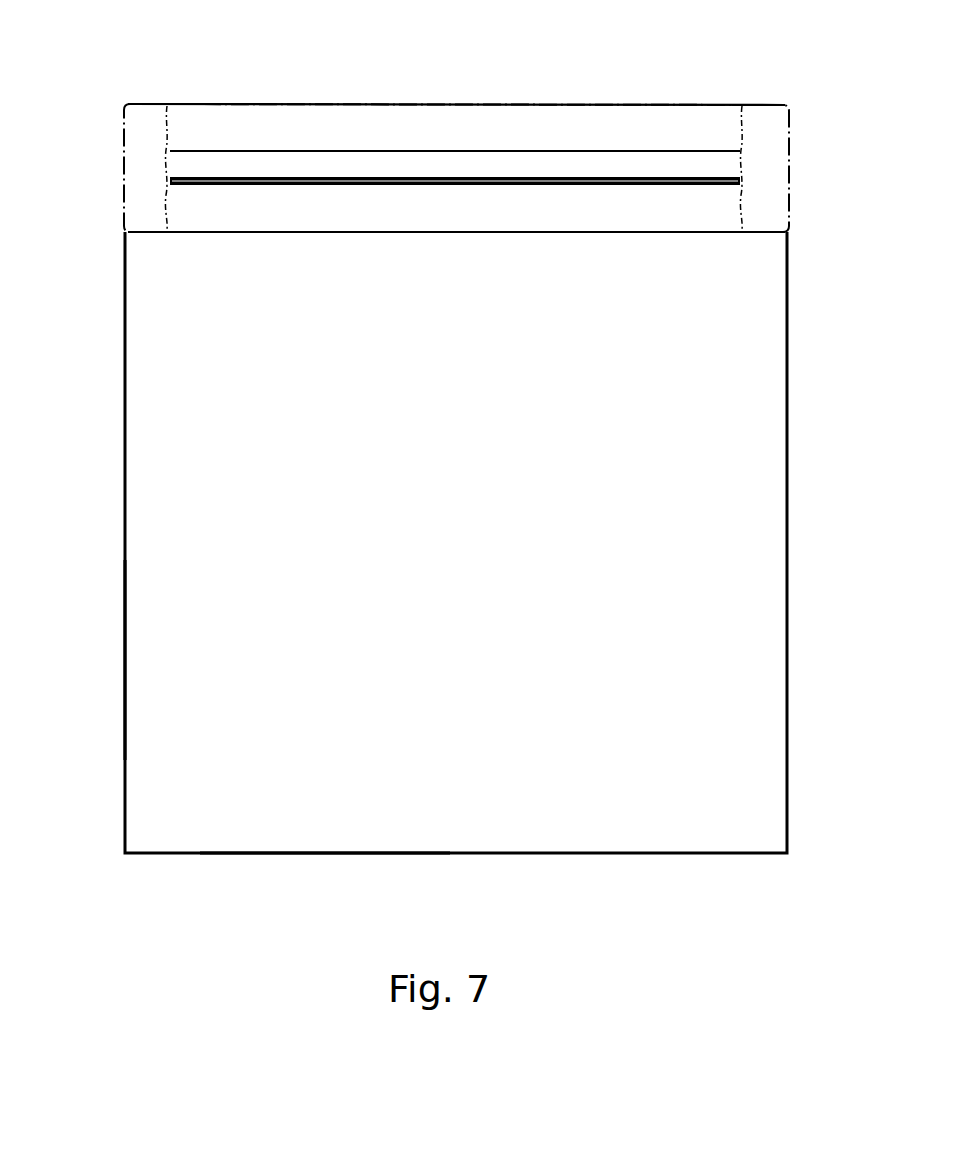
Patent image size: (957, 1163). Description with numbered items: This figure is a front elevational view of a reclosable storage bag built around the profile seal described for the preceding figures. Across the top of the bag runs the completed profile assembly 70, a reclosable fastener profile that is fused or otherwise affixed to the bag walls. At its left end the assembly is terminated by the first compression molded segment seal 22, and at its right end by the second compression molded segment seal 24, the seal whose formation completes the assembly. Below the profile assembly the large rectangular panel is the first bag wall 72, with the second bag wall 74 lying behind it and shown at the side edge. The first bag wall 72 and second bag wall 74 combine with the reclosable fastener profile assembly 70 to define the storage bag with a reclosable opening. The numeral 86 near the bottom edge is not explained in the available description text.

The completed profile assembly 70 is at (540, 136).
The first compression molded segment seal 22 is at (147, 185).
The second compression molded segment seal 24 is at (775, 207).
The first bag wall 72 is at (525, 822).
The second bag wall 74 is at (123, 660).
The bottom edge 86 is at (275, 873).